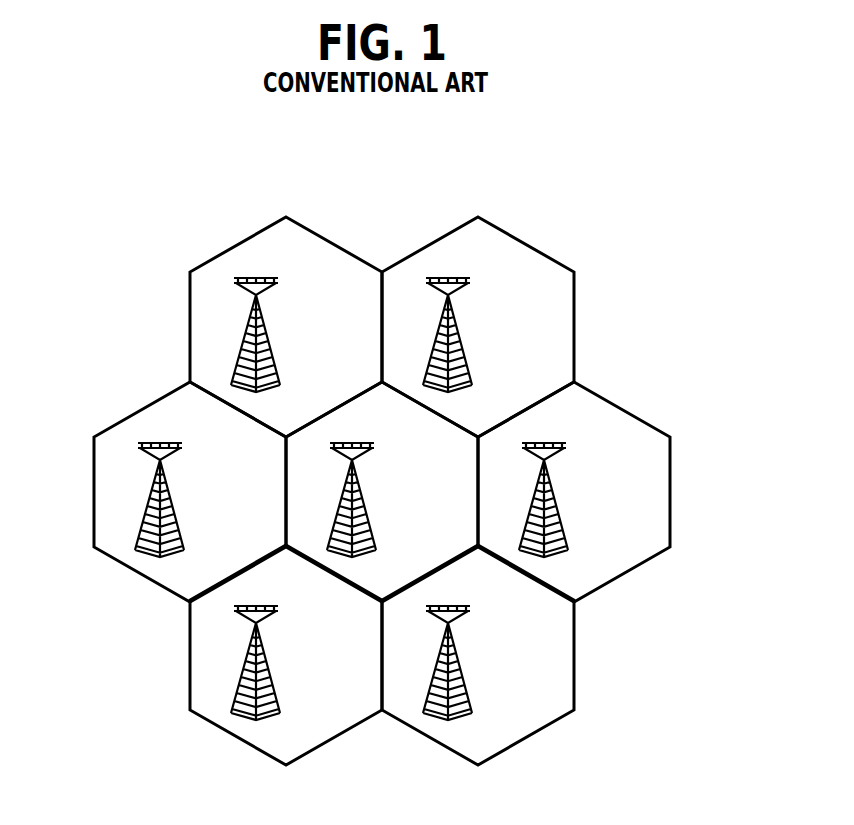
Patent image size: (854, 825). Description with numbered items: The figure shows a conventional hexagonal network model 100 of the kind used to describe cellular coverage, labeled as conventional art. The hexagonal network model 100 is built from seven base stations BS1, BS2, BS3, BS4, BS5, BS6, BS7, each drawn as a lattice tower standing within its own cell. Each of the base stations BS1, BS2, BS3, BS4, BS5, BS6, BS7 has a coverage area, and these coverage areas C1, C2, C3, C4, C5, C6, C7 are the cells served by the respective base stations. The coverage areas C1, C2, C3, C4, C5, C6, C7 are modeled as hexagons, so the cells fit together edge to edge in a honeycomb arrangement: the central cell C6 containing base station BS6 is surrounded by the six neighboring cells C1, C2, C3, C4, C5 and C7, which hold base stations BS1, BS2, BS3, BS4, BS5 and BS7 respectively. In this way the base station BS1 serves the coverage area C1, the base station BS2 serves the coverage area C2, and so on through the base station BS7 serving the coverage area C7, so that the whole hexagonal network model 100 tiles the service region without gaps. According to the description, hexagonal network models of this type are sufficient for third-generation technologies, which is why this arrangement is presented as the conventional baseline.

The hexagonal network model 100 is at (643, 170).
The coverage area C1 is at (505, 253).
The coverage area C2 is at (602, 405).
The coverage area C3 is at (552, 673).
The coverage area C4 is at (202, 650).
The coverage area C5 is at (110, 490).
The coverage area C6 is at (296, 450).
The coverage area C7 is at (255, 255).
The base station BS1 is at (465, 355).
The base station BS2 is at (552, 493).
The base station BS3 is at (468, 698).
The base station BS4 is at (275, 695).
The base station BS5 is at (177, 523).
The base station BS6 is at (368, 530).
The base station BS7 is at (272, 352).